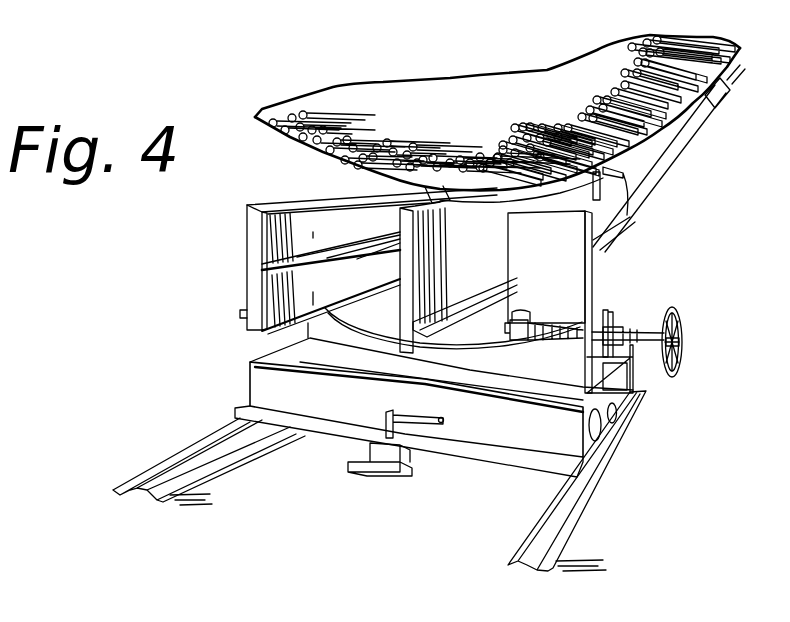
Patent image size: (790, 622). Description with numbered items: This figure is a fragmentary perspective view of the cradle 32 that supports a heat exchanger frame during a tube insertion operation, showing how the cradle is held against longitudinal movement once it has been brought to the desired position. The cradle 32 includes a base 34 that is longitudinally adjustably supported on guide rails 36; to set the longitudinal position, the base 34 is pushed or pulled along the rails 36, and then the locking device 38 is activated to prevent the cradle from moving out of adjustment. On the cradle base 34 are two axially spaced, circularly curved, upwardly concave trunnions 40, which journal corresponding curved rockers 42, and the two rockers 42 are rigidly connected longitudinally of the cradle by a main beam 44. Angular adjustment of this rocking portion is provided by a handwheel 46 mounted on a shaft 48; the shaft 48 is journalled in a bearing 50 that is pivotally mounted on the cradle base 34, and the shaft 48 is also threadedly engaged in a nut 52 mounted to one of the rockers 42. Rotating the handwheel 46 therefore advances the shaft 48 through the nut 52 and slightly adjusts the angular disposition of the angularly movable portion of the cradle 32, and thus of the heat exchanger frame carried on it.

The cradle 32 is at (268, 180).
The base 34 is at (487, 460).
The guide rails 36 is at (585, 502).
The locking device 38 is at (387, 427).
The trunnions 40 is at (308, 325).
The rockers 42 is at (367, 313).
The main beam 44 is at (232, 249).
The handwheel 46 is at (683, 326).
The shaft 48 is at (652, 322).
The bearing 50 is at (604, 318).
The nut 52 is at (522, 310).